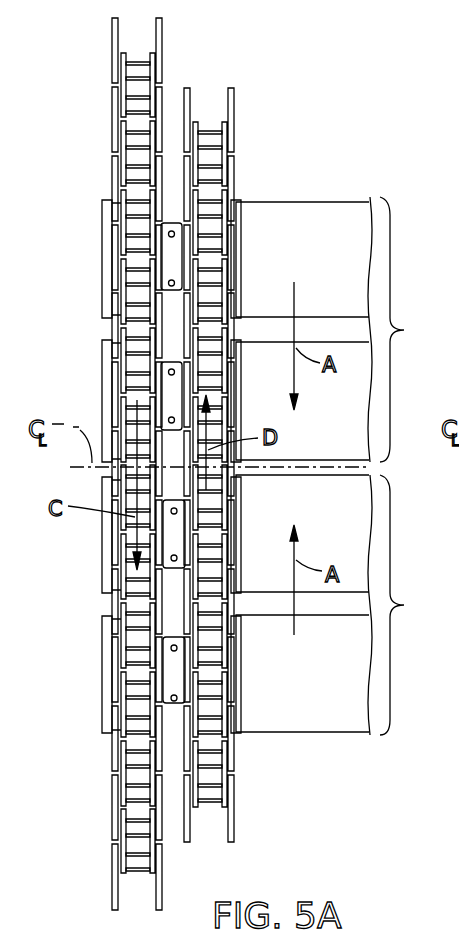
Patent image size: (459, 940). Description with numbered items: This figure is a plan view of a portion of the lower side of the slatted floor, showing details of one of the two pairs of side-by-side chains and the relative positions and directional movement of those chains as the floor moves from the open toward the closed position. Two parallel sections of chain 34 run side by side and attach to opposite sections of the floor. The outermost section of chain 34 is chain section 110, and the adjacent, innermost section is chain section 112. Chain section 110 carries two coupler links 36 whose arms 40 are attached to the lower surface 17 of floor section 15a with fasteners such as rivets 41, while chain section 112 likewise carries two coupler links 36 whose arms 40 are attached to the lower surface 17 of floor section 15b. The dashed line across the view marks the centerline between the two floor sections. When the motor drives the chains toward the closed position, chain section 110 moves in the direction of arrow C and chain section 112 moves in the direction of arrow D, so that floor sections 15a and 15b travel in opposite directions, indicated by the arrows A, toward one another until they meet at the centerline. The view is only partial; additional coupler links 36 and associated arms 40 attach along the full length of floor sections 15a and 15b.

The chain 34 is at (191, 464).
The chain section 110 is at (136, 70).
The chain section 112 is at (212, 173).
The coupler link 36 is at (114, 276).
The arm 40 is at (163, 462).
The rivet 41 is at (174, 234).
The lower surface 17 is at (350, 257).
The floor section 15a is at (414, 329).
The floor section 15b is at (415, 605).